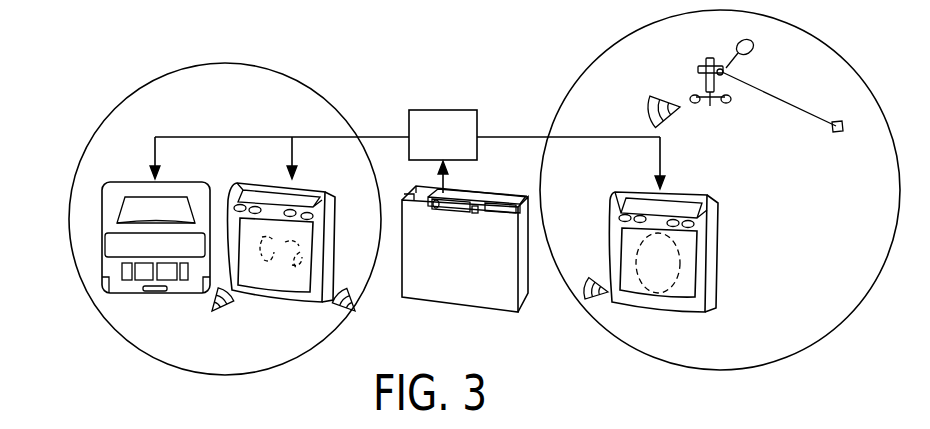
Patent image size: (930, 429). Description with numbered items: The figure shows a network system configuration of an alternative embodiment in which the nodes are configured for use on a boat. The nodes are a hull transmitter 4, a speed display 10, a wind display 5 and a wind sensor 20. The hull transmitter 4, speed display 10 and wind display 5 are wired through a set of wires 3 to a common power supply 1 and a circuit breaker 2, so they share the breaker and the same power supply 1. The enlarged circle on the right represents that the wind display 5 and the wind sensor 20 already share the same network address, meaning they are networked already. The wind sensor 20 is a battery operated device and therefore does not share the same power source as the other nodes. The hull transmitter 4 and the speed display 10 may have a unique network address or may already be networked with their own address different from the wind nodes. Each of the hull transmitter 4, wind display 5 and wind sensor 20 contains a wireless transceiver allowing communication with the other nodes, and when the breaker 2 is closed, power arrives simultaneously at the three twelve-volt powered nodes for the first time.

The common power supply 1 is at (527, 312).
The circuit breaker 2 is at (443, 110).
The set of wires 3 is at (241, 136).
The hull transmitter 4 is at (163, 294).
The wind display 5 is at (719, 275).
The speed display 10 is at (256, 302).
The wind sensor 20 is at (754, 50).